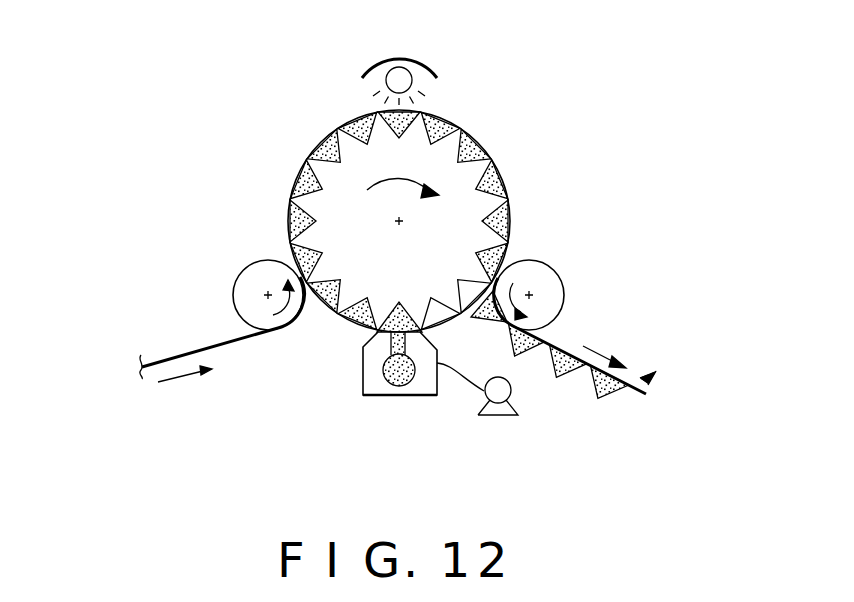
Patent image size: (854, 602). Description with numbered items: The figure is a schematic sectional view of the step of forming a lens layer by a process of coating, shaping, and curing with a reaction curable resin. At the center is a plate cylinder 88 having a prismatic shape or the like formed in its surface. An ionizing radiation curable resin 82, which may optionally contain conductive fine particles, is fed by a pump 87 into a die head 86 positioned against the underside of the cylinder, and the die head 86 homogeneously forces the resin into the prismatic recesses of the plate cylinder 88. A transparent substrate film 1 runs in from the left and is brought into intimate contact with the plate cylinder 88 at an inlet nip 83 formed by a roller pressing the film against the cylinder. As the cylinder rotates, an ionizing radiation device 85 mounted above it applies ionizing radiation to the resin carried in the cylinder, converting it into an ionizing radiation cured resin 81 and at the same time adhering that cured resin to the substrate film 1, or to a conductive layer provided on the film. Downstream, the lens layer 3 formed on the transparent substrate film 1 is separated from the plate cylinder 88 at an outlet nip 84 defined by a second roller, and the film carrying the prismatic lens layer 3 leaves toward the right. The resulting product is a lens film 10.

The transparent substrate film 1 is at (187, 353).
The lens layer 3 is at (615, 398).
The lens film 10 is at (647, 380).
The ionizing radiation cured resin 81 is at (480, 140).
The ionizing radiation curable resin 82 is at (352, 328).
The inlet nip 83 is at (313, 305).
The outlet nip 84 is at (540, 333).
The ionizing radiation device 85 is at (420, 62).
The die head 86 is at (385, 395).
The pump 87 is at (498, 415).
The plate cylinder 88 is at (480, 203).